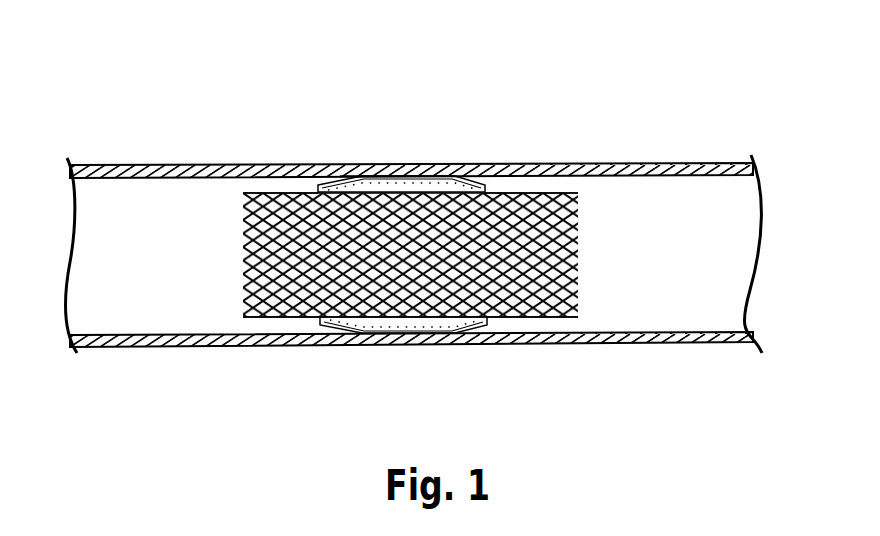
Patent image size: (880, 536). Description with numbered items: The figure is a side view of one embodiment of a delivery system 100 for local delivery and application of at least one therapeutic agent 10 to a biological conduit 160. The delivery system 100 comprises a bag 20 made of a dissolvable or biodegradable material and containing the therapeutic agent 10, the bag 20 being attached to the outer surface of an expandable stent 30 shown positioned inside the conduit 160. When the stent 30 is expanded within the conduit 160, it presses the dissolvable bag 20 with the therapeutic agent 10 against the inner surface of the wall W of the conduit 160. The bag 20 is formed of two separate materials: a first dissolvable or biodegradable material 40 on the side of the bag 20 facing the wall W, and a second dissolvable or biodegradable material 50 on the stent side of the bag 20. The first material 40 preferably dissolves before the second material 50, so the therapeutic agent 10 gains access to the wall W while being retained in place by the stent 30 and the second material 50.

The delivery system 100 is at (485, 76).
The therapeutic agent 10 is at (388, 184).
The bag 20 is at (273, 187).
The expandable stent 30 is at (245, 241).
The first dissolvable or biodegradable material 40 is at (461, 178).
The second dissolvable or biodegradable material 50 is at (517, 192).
The wall W is at (608, 162).
The biological conduit 160 is at (708, 202).